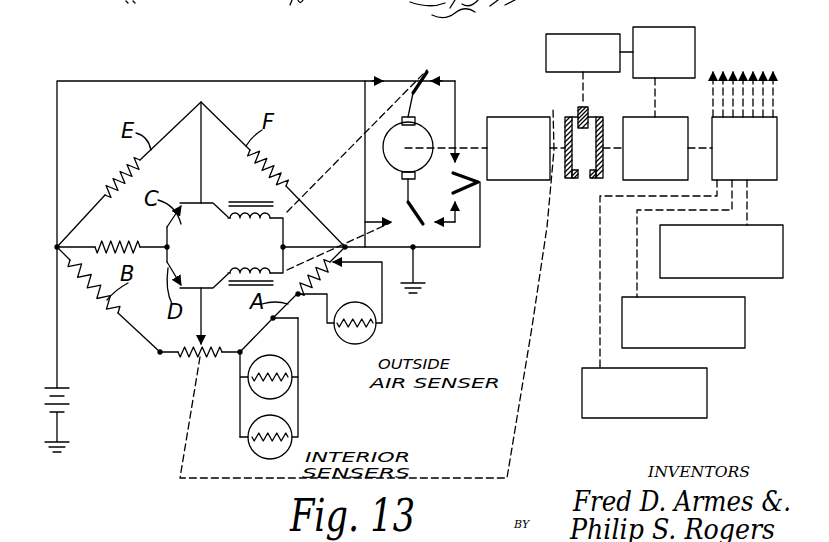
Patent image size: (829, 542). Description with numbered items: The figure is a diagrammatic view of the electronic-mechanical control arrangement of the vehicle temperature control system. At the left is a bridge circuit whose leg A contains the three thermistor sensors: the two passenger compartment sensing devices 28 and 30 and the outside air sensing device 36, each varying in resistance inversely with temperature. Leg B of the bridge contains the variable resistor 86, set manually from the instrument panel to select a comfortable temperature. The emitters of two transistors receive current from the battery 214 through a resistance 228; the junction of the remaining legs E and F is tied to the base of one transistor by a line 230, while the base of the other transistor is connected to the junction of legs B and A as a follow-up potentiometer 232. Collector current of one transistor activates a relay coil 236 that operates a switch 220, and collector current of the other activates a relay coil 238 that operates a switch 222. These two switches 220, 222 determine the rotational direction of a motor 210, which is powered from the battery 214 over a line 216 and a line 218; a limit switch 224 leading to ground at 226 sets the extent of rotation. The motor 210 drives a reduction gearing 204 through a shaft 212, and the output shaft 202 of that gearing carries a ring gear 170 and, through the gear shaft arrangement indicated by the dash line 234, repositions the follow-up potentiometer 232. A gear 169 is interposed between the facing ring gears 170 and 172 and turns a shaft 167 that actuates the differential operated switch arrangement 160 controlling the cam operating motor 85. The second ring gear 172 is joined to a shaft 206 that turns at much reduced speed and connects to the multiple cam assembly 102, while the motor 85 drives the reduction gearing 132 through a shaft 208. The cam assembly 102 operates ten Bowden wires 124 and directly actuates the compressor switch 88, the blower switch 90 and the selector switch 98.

The temperature sensing device 28 is at (294, 377).
The temperature sensing device 30 is at (250, 446).
The sensing device 36 is at (372, 338).
The cam operating motor 85 is at (672, 28).
The variable resistor 86 is at (147, 338).
The compressor switch 88 is at (752, 280).
The blower switch 90 is at (745, 321).
The selector switch 98 is at (708, 376).
The multiple cam assembly 102 is at (748, 181).
The Bowden wires 124 is at (772, 66).
The reduction gearing 132 is at (632, 189).
The differential operated switch arrangement 160 is at (591, 33).
The shaft 167 is at (580, 96).
The gear 169 is at (590, 112).
The ring gear 170 is at (572, 180).
The ring gear 172 is at (597, 180).
The shaft 202 is at (567, 132).
The reduction gearing 204 is at (509, 117).
The shaft 206 is at (706, 150).
The shaft 208 is at (662, 99).
The motor 210 is at (416, 136).
The shaft 212 is at (466, 145).
The battery 214 is at (60, 388).
The line 216 is at (376, 79).
The line 218 is at (365, 131).
The switch 220 is at (427, 72).
The switch 222 is at (410, 213).
The limit switch 224 is at (453, 184).
The ground 226 is at (418, 282).
The resistance 228 is at (110, 245).
The line 230 is at (200, 136).
The follow-up potentiometer 232 is at (206, 350).
The dash line 234 is at (537, 287).
The relay coil 236 is at (231, 225).
The relay coil 238 is at (262, 254).